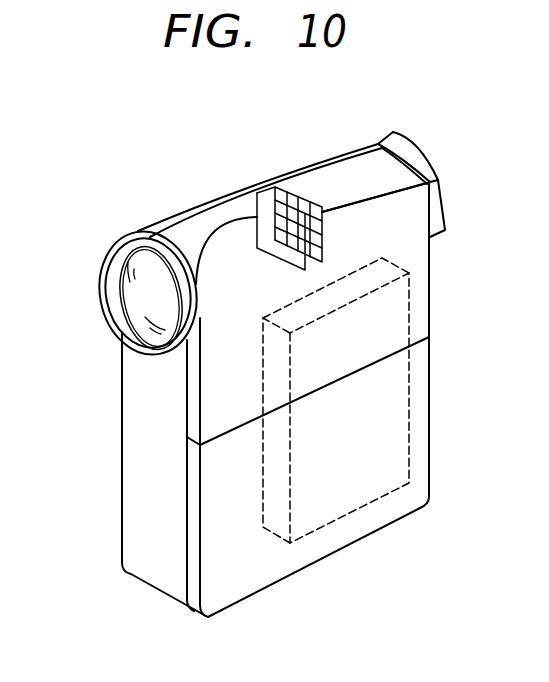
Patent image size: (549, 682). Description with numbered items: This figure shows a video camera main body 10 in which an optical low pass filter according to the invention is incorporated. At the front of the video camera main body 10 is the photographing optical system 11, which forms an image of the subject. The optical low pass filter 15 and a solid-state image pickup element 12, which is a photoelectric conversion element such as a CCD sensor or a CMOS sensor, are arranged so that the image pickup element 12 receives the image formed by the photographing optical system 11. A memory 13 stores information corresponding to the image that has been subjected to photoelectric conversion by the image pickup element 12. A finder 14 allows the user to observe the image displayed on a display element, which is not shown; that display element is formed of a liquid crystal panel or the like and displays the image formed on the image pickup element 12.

The video camera main body 10 is at (147, 567).
The photographing optical system 11 is at (147, 303).
The solid-state image pickup element 12 is at (302, 182).
The memory 13 is at (400, 410).
The finder 14 is at (412, 148).
The optical low pass filter 15 is at (257, 217).